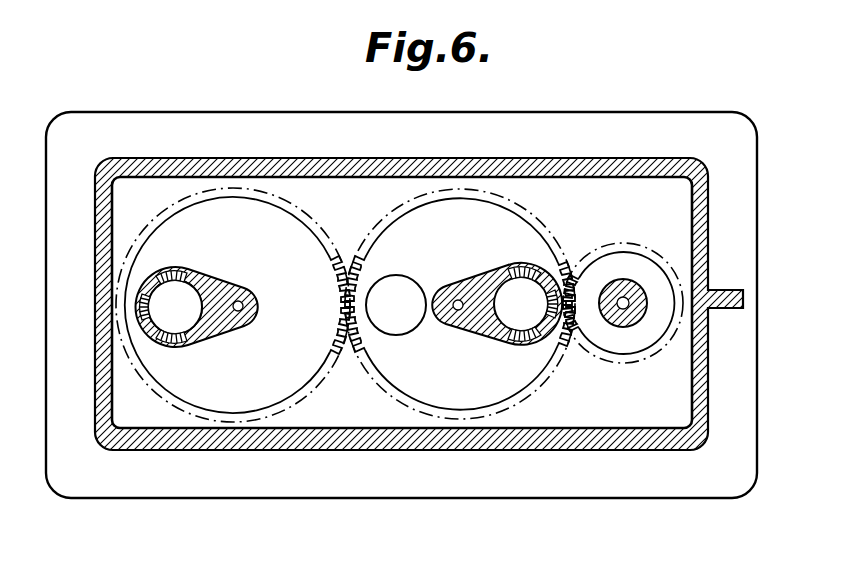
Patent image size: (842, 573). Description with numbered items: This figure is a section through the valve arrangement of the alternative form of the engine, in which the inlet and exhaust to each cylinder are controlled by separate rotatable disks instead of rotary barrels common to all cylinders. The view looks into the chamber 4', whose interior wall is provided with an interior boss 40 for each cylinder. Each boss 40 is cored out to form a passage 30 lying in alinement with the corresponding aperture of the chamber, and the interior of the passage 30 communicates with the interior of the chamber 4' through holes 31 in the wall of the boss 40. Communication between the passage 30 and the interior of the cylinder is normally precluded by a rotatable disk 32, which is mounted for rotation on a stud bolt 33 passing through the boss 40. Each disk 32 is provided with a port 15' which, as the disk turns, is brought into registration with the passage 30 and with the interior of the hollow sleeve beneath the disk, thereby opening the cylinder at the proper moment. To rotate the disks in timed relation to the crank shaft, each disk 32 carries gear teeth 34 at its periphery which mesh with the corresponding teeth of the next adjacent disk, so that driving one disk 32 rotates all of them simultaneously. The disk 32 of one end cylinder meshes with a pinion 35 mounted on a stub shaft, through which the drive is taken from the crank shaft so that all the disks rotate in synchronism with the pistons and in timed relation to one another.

The chamber 4' is at (401, 279).
The port 15' is at (402, 321).
The passage 30 is at (187, 300).
The hole 31 is at (183, 273).
The rotatable disk 32 is at (165, 392).
The stud bolt 33 is at (455, 300).
The gear teeth 34 is at (347, 352).
The pinion 35 is at (640, 360).
The interior boss 40 is at (241, 316).